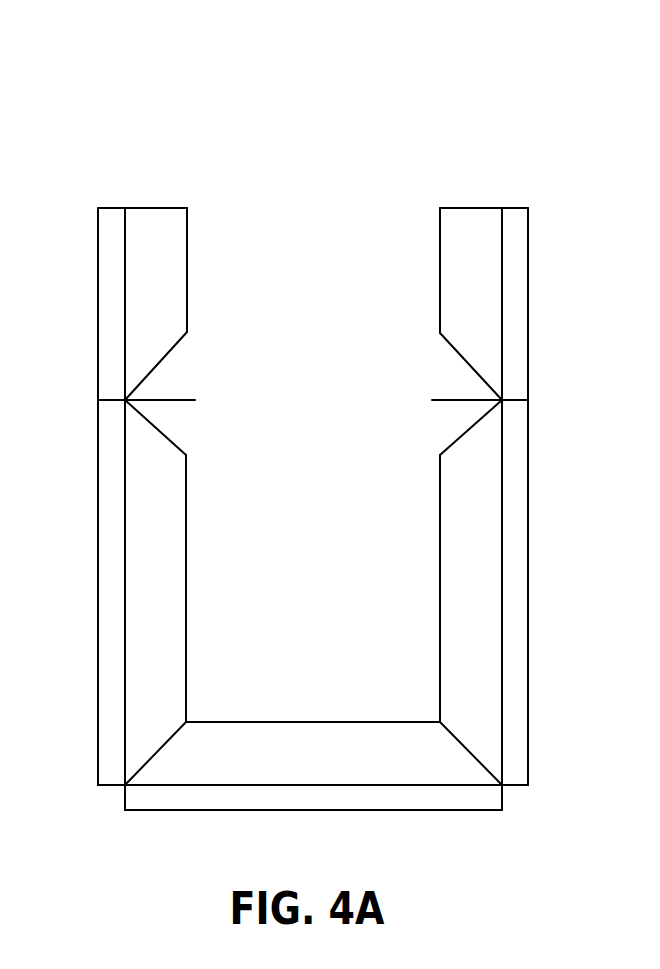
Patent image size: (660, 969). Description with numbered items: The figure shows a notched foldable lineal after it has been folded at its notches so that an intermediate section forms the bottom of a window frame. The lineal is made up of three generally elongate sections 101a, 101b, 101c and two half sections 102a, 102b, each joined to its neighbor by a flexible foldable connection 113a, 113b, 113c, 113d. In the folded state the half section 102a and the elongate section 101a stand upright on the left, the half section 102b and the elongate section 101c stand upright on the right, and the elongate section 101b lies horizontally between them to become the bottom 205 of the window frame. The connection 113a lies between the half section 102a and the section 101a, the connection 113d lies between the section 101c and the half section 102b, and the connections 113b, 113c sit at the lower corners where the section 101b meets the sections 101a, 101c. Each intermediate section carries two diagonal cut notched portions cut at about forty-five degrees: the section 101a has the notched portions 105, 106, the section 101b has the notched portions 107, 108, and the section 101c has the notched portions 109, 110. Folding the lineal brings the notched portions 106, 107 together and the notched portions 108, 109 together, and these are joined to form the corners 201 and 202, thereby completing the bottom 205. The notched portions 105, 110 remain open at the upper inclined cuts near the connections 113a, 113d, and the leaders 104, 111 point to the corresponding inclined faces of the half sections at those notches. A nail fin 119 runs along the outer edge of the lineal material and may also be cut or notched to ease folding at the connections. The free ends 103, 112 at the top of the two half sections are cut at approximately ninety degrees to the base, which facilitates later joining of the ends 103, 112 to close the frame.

The end 103 is at (150, 207).
The end 112 is at (472, 207).
The half section 102a is at (143, 287).
The half section 102b is at (478, 287).
The nail fin 119 is at (113, 622).
The first upper inclined surface 104 is at (178, 345).
The diagonal cut notched portion 105 is at (178, 448).
The foldable connection 113a is at (173, 400).
The second upper inclined surface 111 is at (448, 343).
The diagonal cut notched portion 110 is at (448, 450).
The foldable connection 113d is at (454, 400).
The elongate section 101a is at (143, 531).
The elongate section 101c is at (478, 532).
The diagonal cut notched portion 106 is at (167, 745).
The diagonal cut notched portion 107 is at (177, 733).
The diagonal cut notched portion 108 is at (449, 733).
The diagonal cut notched portion 109 is at (459, 745).
The corner 201 is at (140, 767).
The corner 202 is at (486, 768).
The foldable connection 113b is at (118, 792).
The foldable connection 113c is at (508, 792).
The bottom of the window frame 205 is at (248, 815).
The elongate section 101b is at (365, 758).